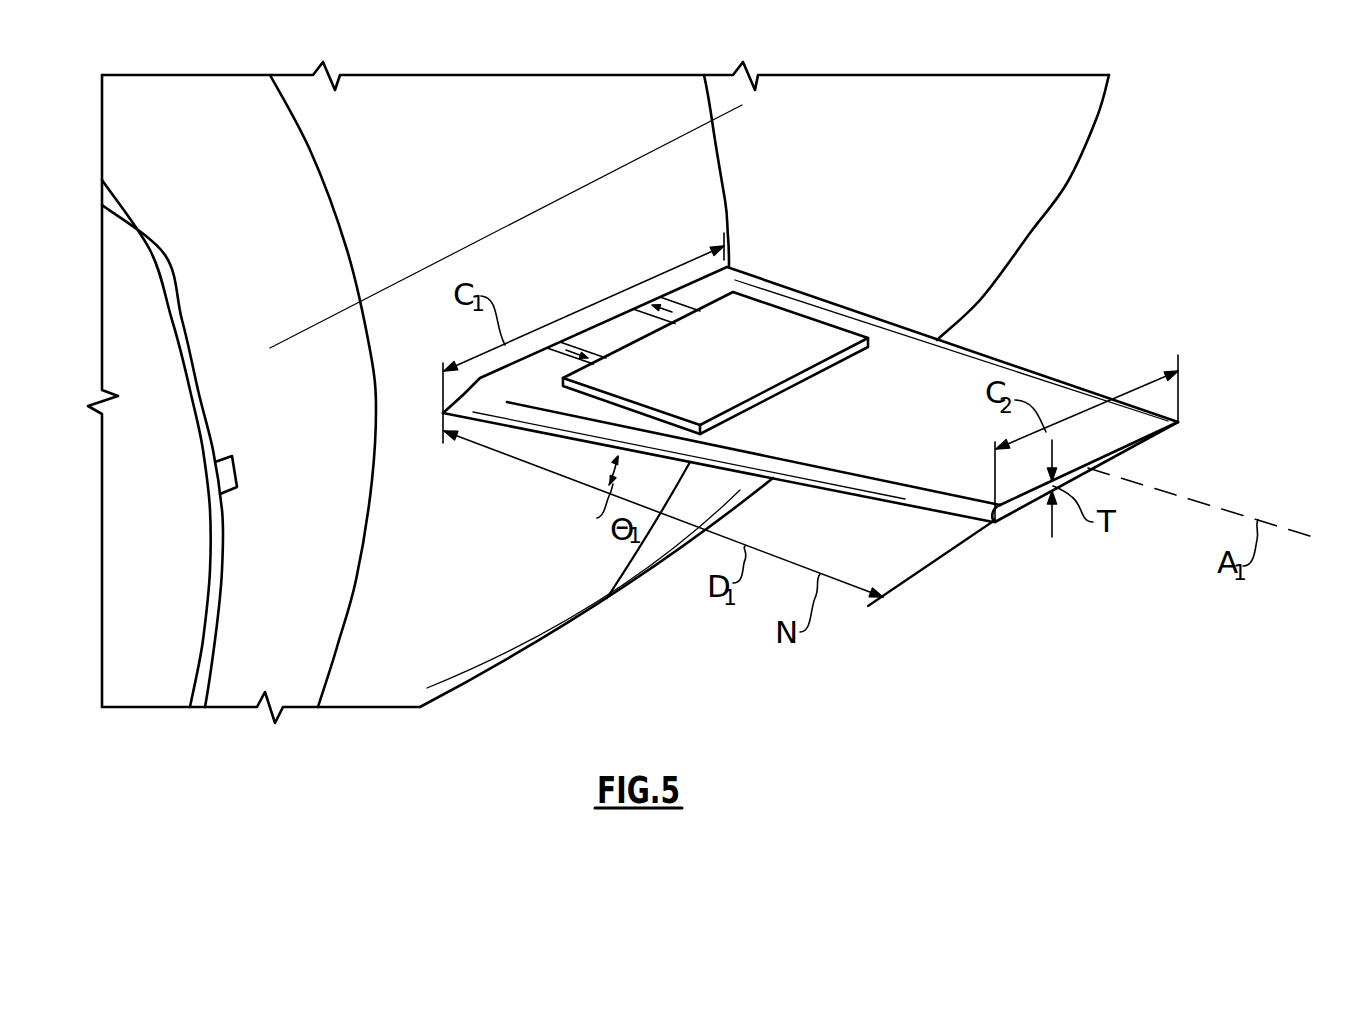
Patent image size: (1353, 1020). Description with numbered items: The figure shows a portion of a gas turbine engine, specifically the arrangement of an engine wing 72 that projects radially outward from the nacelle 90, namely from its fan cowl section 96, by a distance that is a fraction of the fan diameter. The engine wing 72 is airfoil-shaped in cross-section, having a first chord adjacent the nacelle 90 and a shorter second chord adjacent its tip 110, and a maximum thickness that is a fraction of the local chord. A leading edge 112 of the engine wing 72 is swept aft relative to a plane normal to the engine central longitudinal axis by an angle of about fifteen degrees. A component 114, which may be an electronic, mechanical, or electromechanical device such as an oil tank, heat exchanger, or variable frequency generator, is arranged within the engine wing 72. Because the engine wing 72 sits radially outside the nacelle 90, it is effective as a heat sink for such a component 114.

The engine wing 72 is at (1011, 349).
The nacelle 90 is at (489, 677).
The fan cowl section 96 is at (463, 603).
The tip 110 is at (1019, 512).
The leading edge 112 is at (842, 496).
The component 114 is at (806, 370).